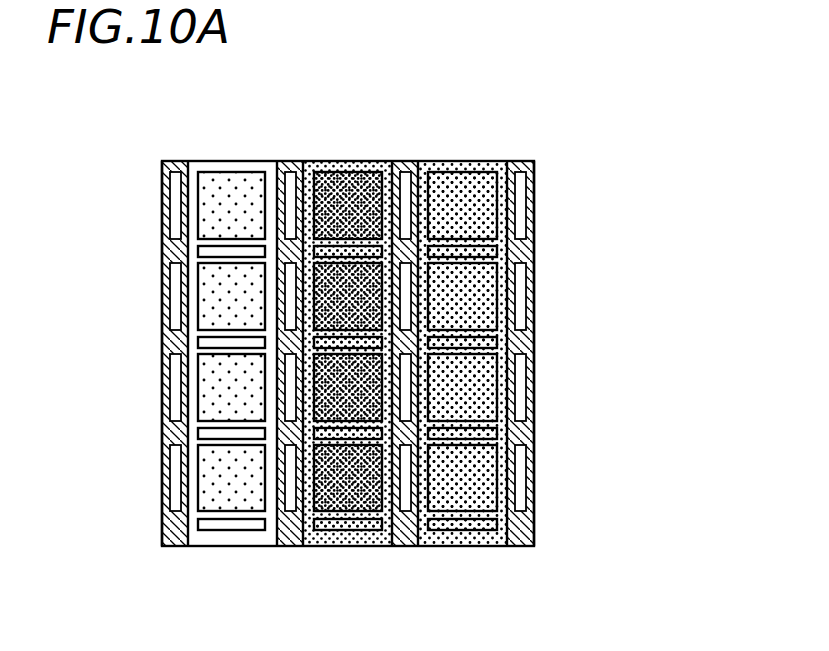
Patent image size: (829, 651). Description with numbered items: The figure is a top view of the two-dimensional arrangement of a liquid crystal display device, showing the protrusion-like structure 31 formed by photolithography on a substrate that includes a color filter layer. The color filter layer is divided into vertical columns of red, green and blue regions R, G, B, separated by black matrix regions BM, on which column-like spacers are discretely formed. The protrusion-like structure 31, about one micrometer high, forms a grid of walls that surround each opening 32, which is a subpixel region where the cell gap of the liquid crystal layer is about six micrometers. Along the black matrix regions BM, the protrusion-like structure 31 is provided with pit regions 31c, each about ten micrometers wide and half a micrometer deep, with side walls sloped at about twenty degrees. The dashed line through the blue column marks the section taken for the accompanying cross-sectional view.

The protrusion-like structure 31 is at (488, 537).
The pit region 31c is at (522, 200).
The opening 32 is at (405, 307).
The black matrix region BM is at (521, 243).
The red color filter region R is at (248, 163).
The green color filter region G is at (346, 163).
The blue color filter region B is at (468, 163).